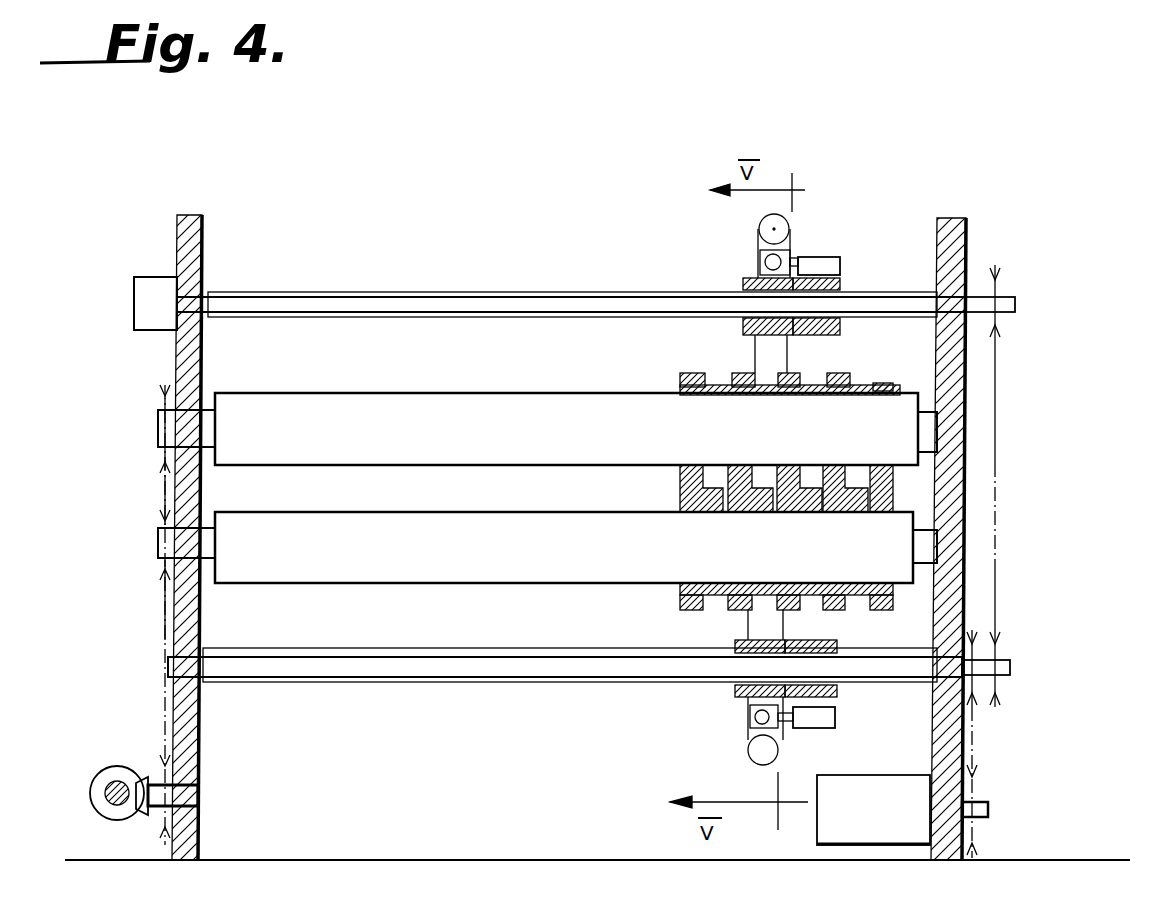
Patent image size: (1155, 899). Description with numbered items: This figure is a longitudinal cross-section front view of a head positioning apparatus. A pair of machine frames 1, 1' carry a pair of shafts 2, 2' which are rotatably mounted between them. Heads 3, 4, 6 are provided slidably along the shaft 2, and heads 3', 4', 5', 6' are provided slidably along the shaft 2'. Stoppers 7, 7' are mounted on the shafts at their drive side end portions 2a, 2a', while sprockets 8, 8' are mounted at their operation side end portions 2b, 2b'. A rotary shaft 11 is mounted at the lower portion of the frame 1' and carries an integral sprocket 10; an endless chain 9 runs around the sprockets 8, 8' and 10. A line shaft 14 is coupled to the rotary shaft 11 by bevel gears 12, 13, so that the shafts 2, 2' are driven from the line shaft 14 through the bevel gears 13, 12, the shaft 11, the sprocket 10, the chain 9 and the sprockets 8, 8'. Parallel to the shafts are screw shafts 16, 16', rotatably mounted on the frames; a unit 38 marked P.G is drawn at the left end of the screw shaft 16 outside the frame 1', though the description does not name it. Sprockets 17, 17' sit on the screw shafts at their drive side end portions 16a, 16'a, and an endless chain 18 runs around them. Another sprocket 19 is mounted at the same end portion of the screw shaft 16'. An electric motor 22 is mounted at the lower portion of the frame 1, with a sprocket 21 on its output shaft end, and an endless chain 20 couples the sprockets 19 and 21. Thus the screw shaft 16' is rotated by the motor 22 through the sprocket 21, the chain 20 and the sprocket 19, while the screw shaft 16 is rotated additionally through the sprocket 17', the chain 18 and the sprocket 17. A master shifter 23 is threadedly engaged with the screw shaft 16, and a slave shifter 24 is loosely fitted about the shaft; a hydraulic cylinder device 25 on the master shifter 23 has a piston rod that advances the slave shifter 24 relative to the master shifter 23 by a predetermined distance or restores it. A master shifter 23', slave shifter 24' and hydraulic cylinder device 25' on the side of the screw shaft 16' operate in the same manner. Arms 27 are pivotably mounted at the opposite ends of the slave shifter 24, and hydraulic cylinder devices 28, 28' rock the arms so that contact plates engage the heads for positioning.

The machine frame 1 is at (970, 519).
The machine frame 1' is at (213, 519).
The shaft 2 is at (566, 412).
The shaft 2' is at (564, 567).
The drive side end portion 2a is at (916, 459).
The drive side end portion 2a' is at (984, 526).
The operation side end portion 2b is at (157, 428).
The operation side end portion 2b' is at (155, 547).
The head 3 is at (766, 372).
The head 3' is at (671, 613).
The head 4 is at (727, 361).
The head 4' is at (708, 623).
The head 5' is at (786, 557).
The head 6 is at (842, 370).
The head 6' is at (850, 622).
The stopper 7 is at (896, 386).
The stopper 7' is at (896, 622).
The sprocket 8 is at (136, 443).
The sprocket 8' is at (135, 505).
The endless chain 9 is at (163, 608).
The sprocket 10 is at (160, 826).
The rotary shaft 11 is at (198, 796).
The bevel gear 12 is at (142, 778).
The bevel gear 13 is at (105, 812).
The line shaft 14 is at (103, 790).
The screw shaft 16 is at (571, 329).
The screw shaft 16' is at (565, 691).
The drive side end portion 16a is at (1015, 304).
The drive side end portion 16'a is at (1027, 681).
The sprocket 17 is at (1029, 298).
The sprocket 17' is at (1022, 666).
The endless chain 18 is at (997, 445).
The sprocket 19 is at (988, 632).
The endless chain 20 is at (974, 740).
The sprocket 21 is at (975, 790).
The electric motor 22 is at (915, 778).
The master shifter 23 is at (844, 272).
The master shifter 23' is at (841, 705).
The slave shifter 24 is at (744, 259).
The slave shifter 24' is at (722, 712).
The hydraulic cylinder device 25 is at (837, 295).
The hydraulic cylinder device 25' is at (810, 741).
The arm 27 is at (790, 347).
The hydraulic cylinder device 28 is at (812, 209).
The hydraulic cylinder device 28' is at (734, 750).
The pulse generator 38 is at (134, 318).